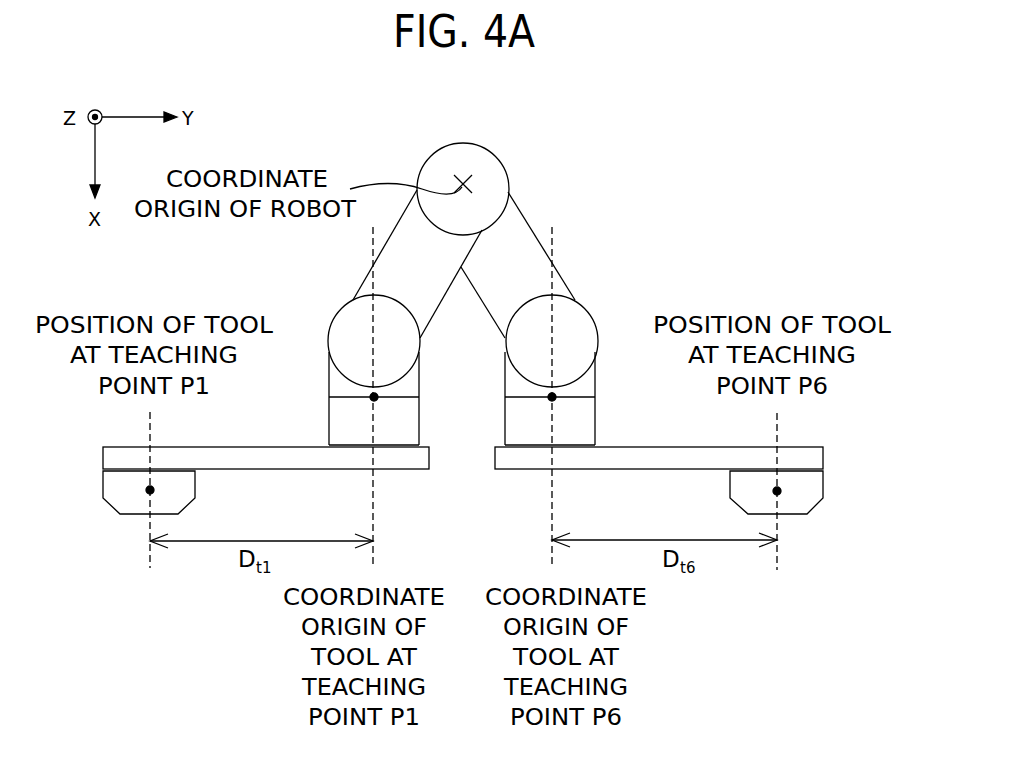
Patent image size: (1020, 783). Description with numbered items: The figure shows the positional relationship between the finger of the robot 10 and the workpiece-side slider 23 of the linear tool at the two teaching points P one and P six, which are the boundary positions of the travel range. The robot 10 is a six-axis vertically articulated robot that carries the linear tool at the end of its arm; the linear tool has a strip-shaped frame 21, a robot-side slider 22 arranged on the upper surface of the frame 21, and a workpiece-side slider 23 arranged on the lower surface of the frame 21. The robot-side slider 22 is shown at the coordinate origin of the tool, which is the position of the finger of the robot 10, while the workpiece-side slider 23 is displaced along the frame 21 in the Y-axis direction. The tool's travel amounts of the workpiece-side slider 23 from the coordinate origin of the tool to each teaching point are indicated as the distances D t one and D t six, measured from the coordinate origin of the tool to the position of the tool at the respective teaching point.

The robot 10 is at (558, 134).
The frame 21 is at (825, 458).
The robot-side slider 22 is at (597, 427).
The workpiece-side slider 23 is at (825, 494).